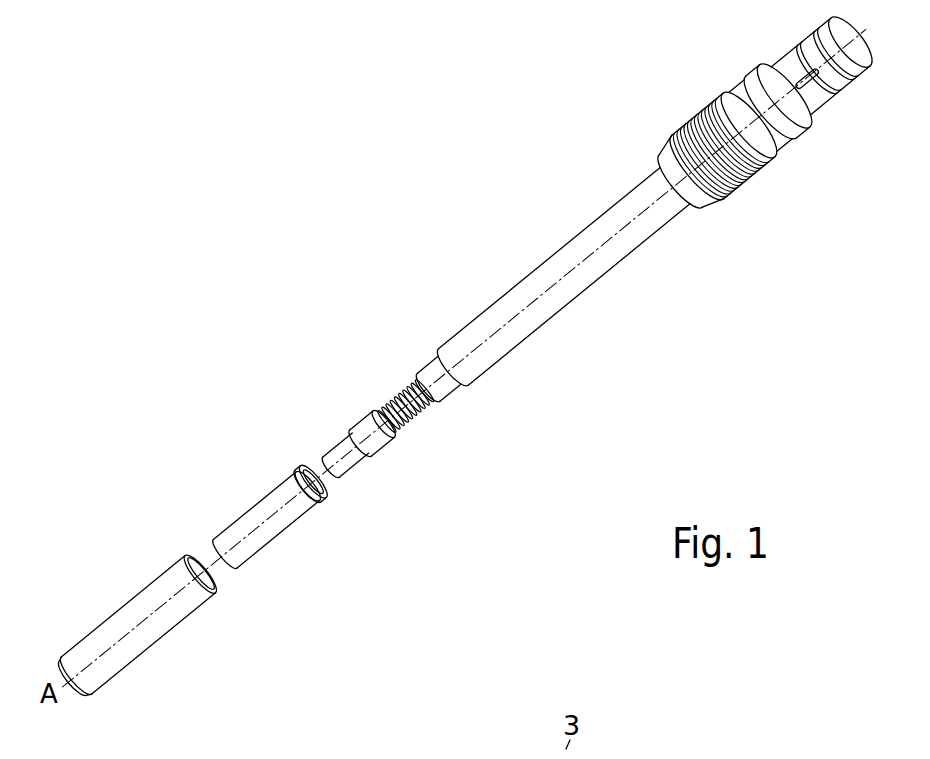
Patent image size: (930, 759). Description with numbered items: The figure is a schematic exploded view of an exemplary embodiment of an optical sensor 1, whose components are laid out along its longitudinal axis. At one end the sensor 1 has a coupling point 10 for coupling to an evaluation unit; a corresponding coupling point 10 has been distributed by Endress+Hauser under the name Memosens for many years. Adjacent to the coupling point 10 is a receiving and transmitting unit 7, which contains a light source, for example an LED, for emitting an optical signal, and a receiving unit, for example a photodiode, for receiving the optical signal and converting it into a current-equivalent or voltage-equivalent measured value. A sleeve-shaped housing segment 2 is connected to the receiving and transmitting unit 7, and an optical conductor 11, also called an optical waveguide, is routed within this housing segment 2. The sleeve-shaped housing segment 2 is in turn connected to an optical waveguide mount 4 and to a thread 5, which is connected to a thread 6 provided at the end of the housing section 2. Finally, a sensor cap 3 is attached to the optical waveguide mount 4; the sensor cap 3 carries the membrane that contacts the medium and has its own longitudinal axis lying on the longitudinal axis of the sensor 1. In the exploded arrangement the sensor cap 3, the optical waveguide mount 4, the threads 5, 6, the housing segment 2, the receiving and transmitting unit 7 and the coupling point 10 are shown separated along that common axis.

The optical sensor 1 is at (445, 212).
The sleeve-shaped housing segment 2 is at (557, 298).
The sensor cap 3 is at (153, 637).
The optical waveguide mount 4 is at (258, 538).
The thread 5 is at (320, 500).
The thread 6 is at (460, 387).
The receiving and transmitting unit 7 is at (707, 200).
The coupling point 10 is at (850, 75).
The optical conductor 11 is at (368, 423).